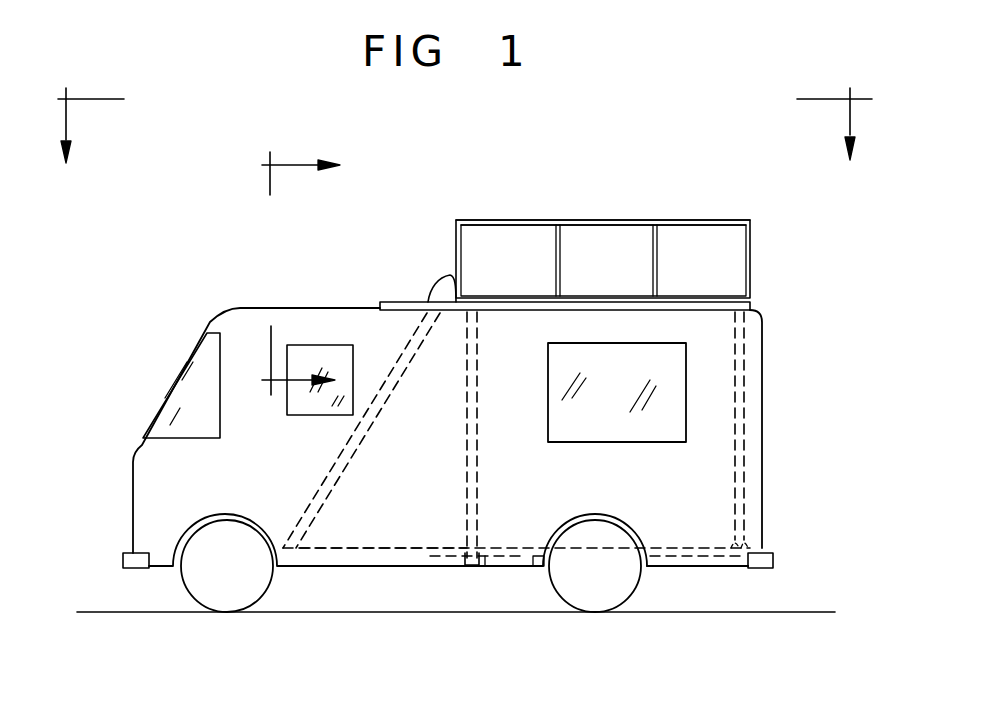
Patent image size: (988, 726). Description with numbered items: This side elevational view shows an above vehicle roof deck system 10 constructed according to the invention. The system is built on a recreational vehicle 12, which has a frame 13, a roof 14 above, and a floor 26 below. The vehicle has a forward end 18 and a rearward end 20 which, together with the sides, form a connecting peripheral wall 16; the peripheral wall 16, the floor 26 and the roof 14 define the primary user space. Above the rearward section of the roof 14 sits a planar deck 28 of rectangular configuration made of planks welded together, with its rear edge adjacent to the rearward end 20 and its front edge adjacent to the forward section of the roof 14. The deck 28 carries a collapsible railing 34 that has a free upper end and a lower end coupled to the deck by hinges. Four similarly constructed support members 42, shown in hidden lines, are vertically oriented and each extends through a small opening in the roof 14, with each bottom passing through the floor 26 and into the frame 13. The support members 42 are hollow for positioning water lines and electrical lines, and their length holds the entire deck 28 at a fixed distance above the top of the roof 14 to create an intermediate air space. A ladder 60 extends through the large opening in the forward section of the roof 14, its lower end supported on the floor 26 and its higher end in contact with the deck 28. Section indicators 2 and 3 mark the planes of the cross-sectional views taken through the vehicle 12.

The section line 2- 2 is at (455, 107).
The section line 3- 3 is at (294, 271).
The above vehicle roof deck system 10 is at (665, 166).
The recreational vehicle 12 is at (235, 350).
The frame 13 is at (690, 550).
The roof 14 is at (300, 308).
The peripheral wall 16 is at (435, 491).
The forward end 18 is at (133, 490).
The rearward end 20 is at (762, 478).
The floor 26 is at (370, 548).
The planar deck 28 is at (693, 297).
The collapsible railing 34 is at (750, 253).
The support members 42 is at (744, 365).
The ladder 60 is at (387, 378).